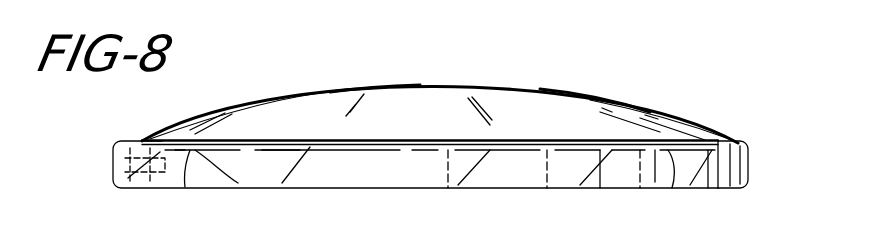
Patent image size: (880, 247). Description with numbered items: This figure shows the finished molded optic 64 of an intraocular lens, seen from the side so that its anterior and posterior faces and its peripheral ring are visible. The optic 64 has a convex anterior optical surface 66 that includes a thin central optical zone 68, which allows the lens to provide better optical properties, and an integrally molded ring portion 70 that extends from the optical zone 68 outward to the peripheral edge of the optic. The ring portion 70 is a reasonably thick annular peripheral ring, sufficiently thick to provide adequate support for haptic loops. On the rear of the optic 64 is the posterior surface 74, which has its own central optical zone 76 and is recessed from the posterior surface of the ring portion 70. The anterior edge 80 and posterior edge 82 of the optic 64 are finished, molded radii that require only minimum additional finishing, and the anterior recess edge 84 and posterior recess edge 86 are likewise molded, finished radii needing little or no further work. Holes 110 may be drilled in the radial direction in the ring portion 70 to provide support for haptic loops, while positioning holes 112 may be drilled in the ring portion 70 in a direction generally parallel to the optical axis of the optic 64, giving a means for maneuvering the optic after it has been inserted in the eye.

The optic 64 is at (428, 82).
The convex anterior optical surface 66 is at (623, 110).
The central optical zone 68 is at (383, 85).
The ring portion 70 is at (137, 140).
The posterior surface 74 is at (587, 152).
The central optical zone of posterior surface 76 is at (408, 150).
The anterior edge 80 is at (735, 145).
The posterior edge 82 is at (745, 185).
The anterior recess edge 84 is at (247, 188).
The posterior recess edge 86 is at (186, 190).
The holes 110 is at (130, 164).
The positioning holes 112 is at (712, 176).